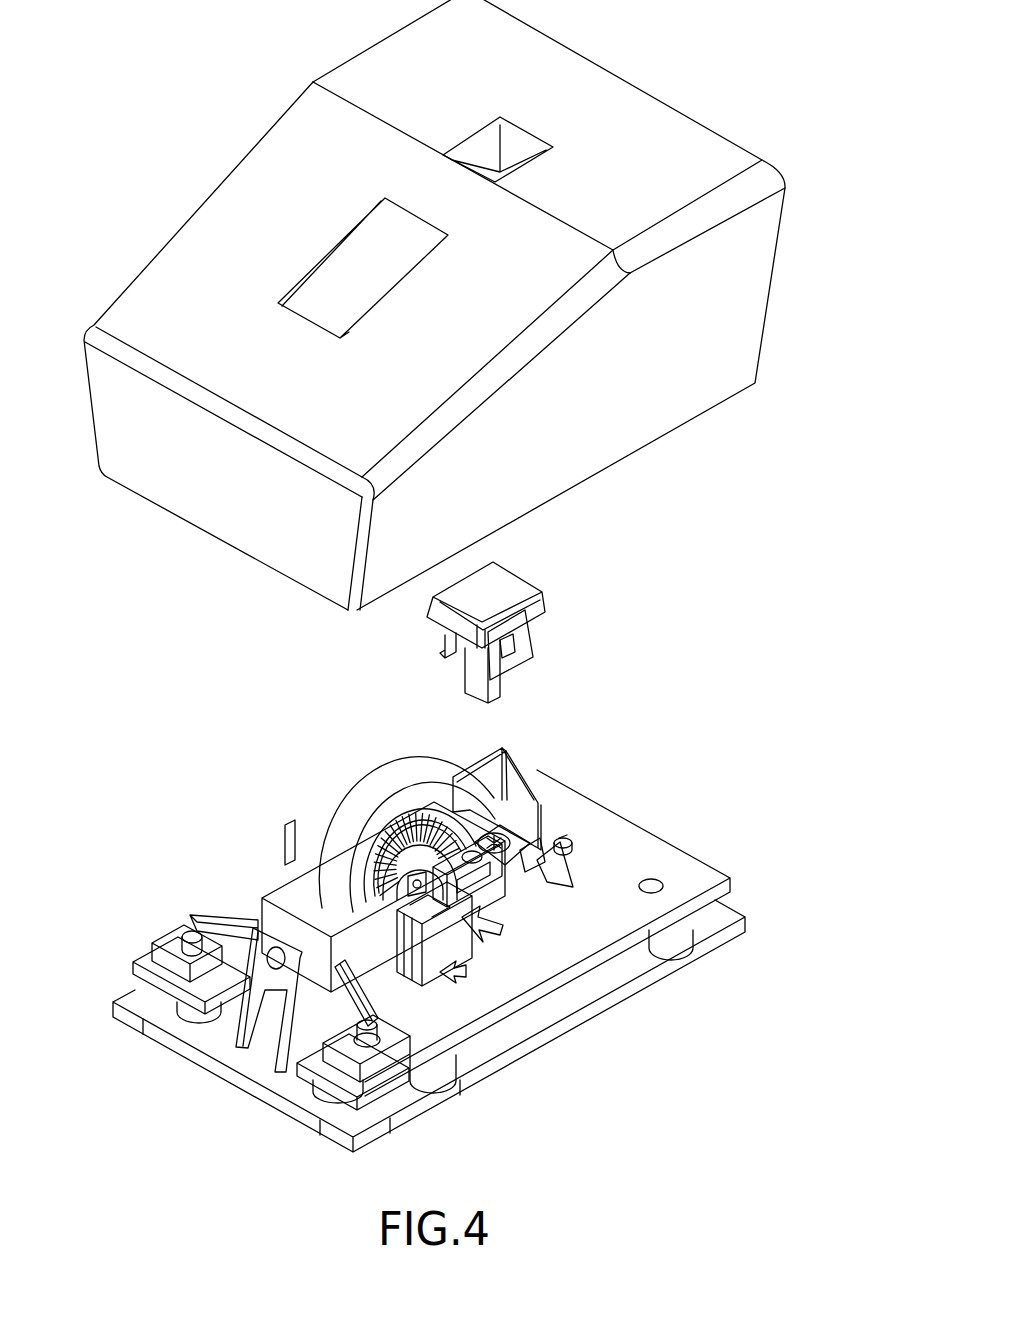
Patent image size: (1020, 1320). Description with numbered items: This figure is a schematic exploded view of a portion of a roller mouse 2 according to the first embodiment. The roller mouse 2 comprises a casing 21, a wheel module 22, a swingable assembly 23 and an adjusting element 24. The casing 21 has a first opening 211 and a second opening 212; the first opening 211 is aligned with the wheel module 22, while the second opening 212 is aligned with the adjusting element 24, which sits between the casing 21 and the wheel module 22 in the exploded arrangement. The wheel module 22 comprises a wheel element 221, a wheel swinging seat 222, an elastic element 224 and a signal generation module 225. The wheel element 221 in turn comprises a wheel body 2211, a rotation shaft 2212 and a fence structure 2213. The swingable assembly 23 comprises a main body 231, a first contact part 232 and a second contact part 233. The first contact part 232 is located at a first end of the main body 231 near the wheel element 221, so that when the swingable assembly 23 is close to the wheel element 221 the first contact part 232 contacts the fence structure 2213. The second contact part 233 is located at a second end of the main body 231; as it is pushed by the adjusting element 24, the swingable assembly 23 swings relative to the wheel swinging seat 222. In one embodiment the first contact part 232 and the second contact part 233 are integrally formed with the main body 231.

The roller mouse 2 is at (197, 49).
The casing 21 is at (176, 200).
The first opening 211 is at (338, 266).
The second opening 212 is at (521, 151).
The wheel module 22 is at (265, 861).
The wheel element 221 is at (346, 757).
The wheel body 2211 is at (393, 772).
The rotation shaft 2212 is at (397, 850).
The fence structure 2213 is at (407, 865).
The wheel swinging seat 222 is at (475, 905).
The elastic element 224 is at (500, 882).
The signal generation module 225 is at (460, 975).
The swingable assembly 23 is at (695, 722).
The main body 231 is at (553, 856).
The first contact part 232 is at (470, 813).
The second contact part 233 is at (477, 788).
The adjusting element 24 is at (504, 580).